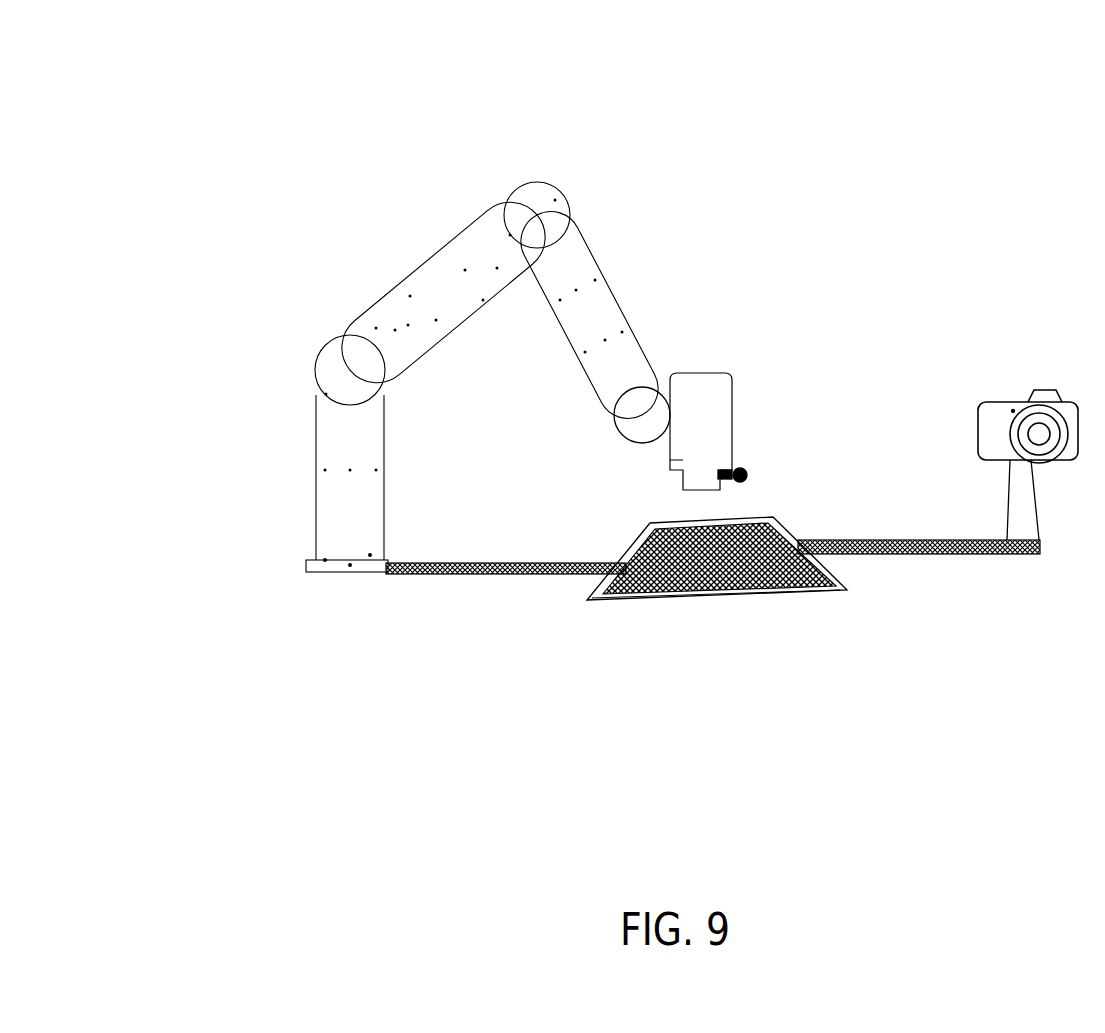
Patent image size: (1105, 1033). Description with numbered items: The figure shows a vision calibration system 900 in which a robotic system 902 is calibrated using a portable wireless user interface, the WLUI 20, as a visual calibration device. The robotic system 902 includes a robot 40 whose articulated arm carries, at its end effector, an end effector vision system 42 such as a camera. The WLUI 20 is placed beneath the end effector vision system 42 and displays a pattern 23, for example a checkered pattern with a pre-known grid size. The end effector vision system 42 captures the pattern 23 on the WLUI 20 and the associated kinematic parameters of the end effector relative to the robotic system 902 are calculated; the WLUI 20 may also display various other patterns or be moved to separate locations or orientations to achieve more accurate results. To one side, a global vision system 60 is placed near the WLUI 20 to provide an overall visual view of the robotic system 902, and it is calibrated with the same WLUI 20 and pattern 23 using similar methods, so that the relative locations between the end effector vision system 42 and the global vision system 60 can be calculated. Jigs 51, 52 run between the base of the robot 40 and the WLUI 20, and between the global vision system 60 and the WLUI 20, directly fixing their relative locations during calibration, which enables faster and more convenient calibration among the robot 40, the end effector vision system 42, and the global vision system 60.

The vision calibration system 900 is at (188, 110).
The robotic system 902 is at (382, 305).
The robot 40 is at (326, 565).
The jig 51 is at (413, 574).
The jig 52 is at (935, 554).
The WLUI 20 is at (600, 598).
The pattern 23 is at (778, 572).
The end effector vision system 42 is at (748, 475).
The global vision system 60 is at (1067, 456).